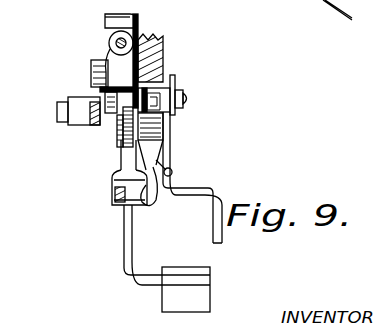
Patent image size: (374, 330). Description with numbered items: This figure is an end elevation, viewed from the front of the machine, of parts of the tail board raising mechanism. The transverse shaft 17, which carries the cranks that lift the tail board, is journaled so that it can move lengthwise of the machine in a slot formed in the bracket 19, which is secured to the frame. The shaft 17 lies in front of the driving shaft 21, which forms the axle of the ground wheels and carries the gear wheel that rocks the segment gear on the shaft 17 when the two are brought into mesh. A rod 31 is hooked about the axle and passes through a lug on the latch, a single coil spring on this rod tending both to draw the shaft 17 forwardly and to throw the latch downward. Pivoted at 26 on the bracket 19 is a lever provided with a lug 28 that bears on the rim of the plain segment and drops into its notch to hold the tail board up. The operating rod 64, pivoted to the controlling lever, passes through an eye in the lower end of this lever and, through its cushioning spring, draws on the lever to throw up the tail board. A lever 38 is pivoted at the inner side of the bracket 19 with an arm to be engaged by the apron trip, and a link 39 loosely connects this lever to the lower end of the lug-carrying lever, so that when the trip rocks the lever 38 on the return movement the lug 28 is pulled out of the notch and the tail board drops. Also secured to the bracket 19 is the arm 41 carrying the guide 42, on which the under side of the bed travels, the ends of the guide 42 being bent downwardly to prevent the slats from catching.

The rod 31 is at (138, 34).
The lug 28 is at (91, 90).
The transverse shaft 17 is at (60, 112).
The bracket 19 is at (158, 127).
The pivot 26 is at (112, 174).
The driving shaft 21 is at (112, 178).
The operating rod 64 is at (118, 205).
The link 39 is at (173, 172).
The lever 38 is at (205, 193).
The arm 41 is at (124, 250).
The guide 42 is at (200, 298).